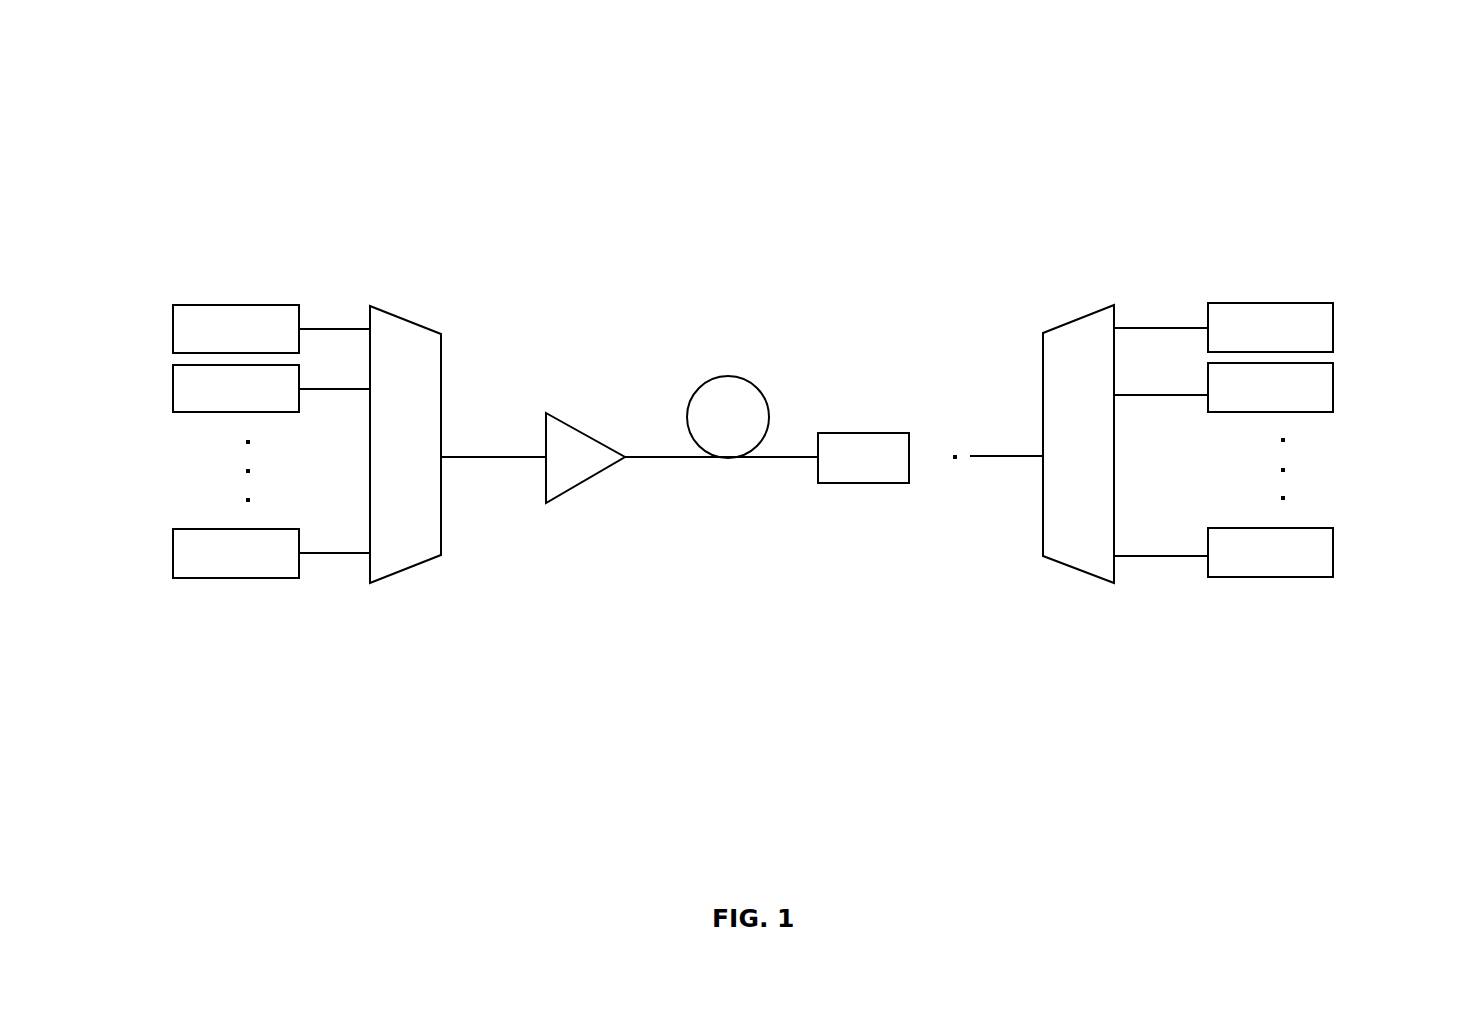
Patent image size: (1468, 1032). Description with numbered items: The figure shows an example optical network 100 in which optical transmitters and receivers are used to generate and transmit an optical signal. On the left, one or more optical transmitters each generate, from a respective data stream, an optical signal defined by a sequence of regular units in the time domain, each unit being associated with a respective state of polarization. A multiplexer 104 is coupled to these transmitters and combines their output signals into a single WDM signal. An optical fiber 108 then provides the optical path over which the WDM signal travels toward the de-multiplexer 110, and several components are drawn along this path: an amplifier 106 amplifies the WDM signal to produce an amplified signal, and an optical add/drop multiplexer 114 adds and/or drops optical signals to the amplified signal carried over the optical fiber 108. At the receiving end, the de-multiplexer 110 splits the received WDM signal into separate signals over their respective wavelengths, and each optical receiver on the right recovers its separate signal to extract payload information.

The optical network 100 is at (396, 60).
The multiplexer (MUX) 104 is at (397, 316).
The amplifier 106 is at (578, 431).
The optical fiber 108 is at (759, 391).
The optical add/drop multiplexer (OADM) 114 is at (892, 433).
The de-multiplexer (DEMUX) 110 is at (1077, 319).